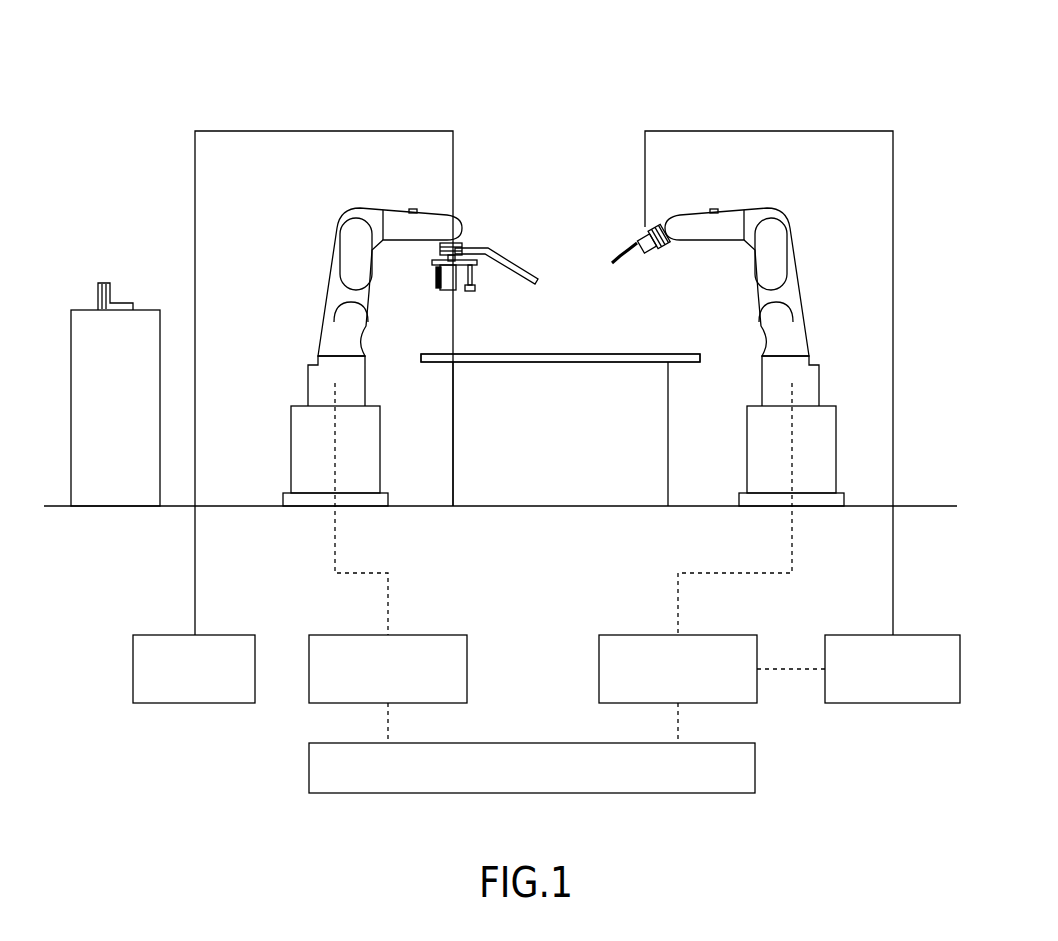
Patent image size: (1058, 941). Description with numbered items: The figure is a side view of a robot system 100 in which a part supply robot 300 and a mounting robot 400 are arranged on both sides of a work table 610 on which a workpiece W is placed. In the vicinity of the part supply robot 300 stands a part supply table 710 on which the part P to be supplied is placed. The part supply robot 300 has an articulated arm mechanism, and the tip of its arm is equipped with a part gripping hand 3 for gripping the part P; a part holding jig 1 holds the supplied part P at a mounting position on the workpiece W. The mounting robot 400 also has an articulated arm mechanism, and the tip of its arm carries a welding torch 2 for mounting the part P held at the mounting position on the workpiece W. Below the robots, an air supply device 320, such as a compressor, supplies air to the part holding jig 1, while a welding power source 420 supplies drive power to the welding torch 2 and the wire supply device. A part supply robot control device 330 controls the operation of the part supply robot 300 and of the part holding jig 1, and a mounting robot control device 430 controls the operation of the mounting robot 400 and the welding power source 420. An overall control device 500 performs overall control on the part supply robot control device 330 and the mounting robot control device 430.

The robot system 100 is at (547, 82).
The part supply table 710 is at (82, 308).
The part P is at (104, 283).
The work table 610 is at (658, 437).
The workpiece W is at (655, 354).
The part supply robot 300 is at (303, 297).
The part holding jig 1 is at (424, 277).
The part gripping hand 3 is at (501, 240).
The mounting robot 400 is at (813, 293).
The welding torch 2 is at (622, 226).
The air supply device 320 is at (188, 705).
The part supply robot control device 330 is at (443, 633).
The mounting robot control device 430 is at (636, 633).
The welding power source 420 is at (890, 705).
The overall control device 500 is at (538, 742).